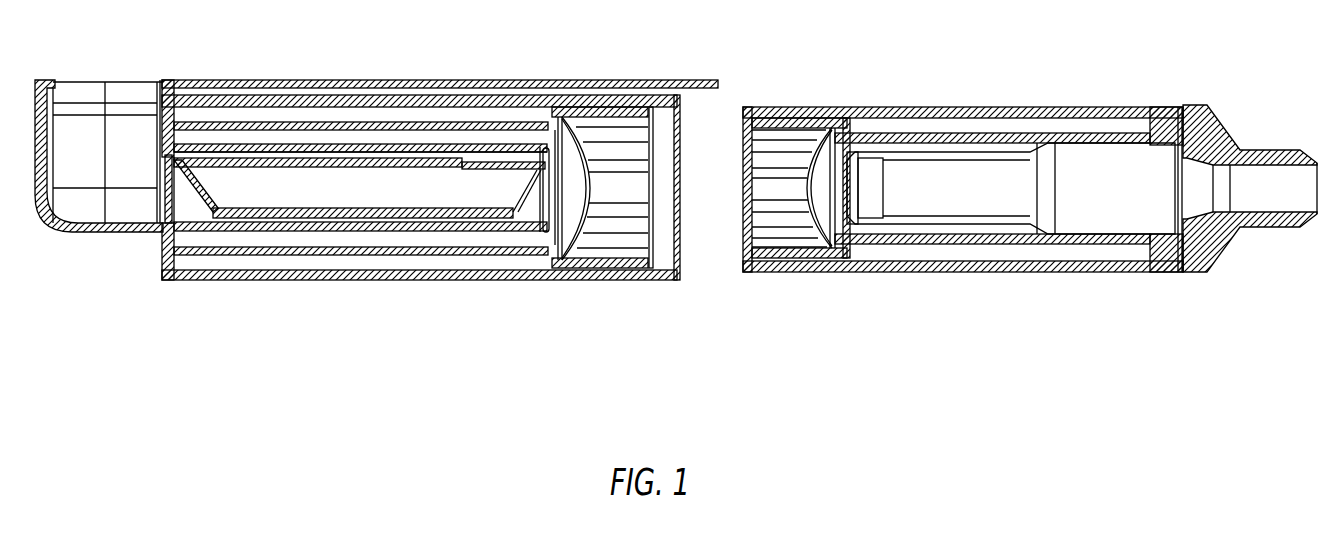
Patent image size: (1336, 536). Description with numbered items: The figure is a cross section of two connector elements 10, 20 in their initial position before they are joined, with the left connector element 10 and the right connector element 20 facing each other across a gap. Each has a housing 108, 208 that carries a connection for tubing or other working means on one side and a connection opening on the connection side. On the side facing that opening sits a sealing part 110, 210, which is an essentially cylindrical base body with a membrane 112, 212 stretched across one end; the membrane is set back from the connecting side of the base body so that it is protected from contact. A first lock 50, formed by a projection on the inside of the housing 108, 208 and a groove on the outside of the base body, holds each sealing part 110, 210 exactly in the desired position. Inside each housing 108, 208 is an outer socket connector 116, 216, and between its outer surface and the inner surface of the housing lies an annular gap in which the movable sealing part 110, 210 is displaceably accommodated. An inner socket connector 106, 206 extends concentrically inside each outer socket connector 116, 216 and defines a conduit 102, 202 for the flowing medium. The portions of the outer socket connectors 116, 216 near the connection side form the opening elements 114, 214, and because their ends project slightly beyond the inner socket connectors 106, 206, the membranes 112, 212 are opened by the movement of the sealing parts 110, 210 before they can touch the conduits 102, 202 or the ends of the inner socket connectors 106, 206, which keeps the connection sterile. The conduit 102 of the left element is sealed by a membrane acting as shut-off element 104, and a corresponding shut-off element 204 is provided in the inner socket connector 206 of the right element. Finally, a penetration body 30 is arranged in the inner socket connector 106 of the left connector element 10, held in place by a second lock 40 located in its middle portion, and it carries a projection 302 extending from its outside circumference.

The connector element 10 is at (394, 60).
The connector element 20 is at (1000, 204).
The penetration body 30 is at (359, 255).
The second lock 40 is at (380, 152).
The first lock 50 is at (760, 107).
The conduit 102 is at (527, 213).
The shut-off element 104 is at (156, 200).
The inner socket connector 106 is at (455, 232).
The housing 108 is at (353, 280).
The sealing part 110 is at (612, 107).
The membrane 112 is at (592, 182).
The opening element 114 is at (552, 268).
The outer socket connector 116 is at (509, 122).
The conduit 202 is at (983, 197).
The shut-off element 204 is at (818, 272).
The inner socket connector 206 is at (882, 228).
The housing 208 is at (918, 273).
The sealing part 210 is at (812, 118).
The membrane 212 is at (807, 192).
The opening element 214 is at (777, 272).
The outer socket connector 216 is at (945, 133).
The projection 302 is at (468, 168).